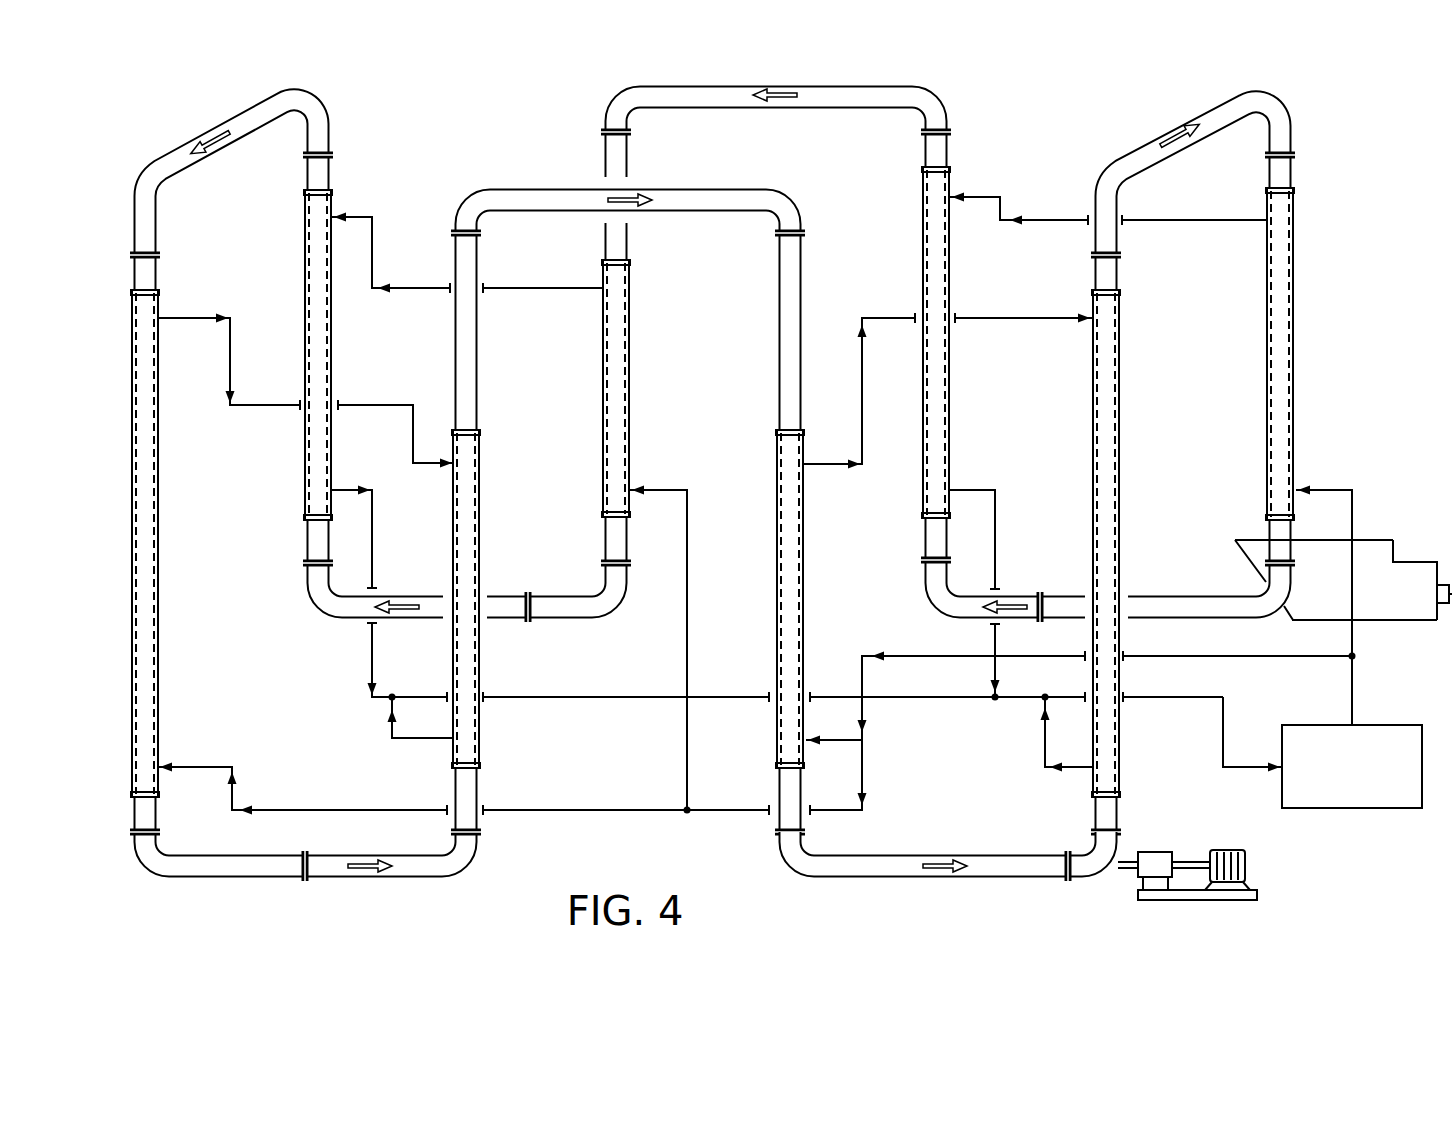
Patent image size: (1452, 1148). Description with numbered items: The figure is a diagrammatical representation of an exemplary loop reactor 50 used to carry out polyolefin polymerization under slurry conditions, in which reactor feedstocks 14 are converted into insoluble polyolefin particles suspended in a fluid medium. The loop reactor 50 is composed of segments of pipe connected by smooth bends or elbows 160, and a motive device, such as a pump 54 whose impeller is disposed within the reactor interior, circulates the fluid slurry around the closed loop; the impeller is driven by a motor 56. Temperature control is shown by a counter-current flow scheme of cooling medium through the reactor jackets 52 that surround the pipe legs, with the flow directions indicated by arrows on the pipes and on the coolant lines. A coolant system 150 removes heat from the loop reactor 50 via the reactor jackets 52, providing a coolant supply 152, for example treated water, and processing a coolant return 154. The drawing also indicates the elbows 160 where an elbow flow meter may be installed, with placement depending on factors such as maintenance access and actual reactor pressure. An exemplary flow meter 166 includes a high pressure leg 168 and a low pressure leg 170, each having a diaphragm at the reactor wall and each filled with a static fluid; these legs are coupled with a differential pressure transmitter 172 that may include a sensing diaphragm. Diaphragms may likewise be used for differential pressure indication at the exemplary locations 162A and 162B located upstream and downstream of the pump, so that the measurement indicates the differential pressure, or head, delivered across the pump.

The reactor feedstocks 14 is at (1287, 120).
The loop reactor 50 is at (1048, 130).
The reactor jackets 52 is at (334, 378).
The pump 54 is at (1152, 852).
The motor 56 is at (1248, 866).
The coolant system 150 is at (1342, 810).
The coolant supply 152 is at (1343, 567).
The coolant return 154 is at (1226, 732).
The elbows 160 is at (472, 192).
The differential pressure indication location upstream of pump 162A is at (1002, 880).
The differential pressure indication location downstream of pump 162B is at (1122, 818).
The flow meter 166 is at (1417, 528).
The high pressure leg 168 is at (1394, 622).
The low pressure leg 170 is at (1360, 540).
The differential pressure transmitter 172 is at (1450, 620).